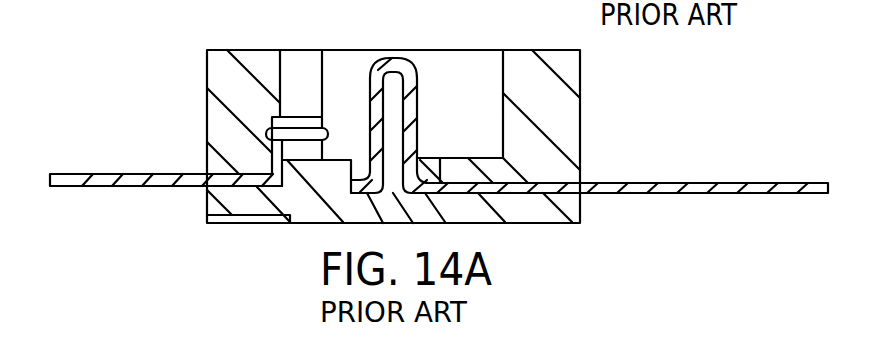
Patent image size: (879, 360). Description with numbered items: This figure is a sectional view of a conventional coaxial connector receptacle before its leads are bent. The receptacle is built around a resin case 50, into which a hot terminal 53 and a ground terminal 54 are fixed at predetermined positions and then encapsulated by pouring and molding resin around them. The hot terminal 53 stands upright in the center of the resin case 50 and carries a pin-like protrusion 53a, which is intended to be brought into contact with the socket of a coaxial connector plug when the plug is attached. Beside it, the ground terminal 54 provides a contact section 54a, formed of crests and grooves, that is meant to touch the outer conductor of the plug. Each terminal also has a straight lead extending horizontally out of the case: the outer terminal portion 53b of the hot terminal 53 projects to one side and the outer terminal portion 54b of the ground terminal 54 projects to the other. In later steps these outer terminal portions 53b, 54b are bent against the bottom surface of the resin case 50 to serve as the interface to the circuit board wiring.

The resin case 50 is at (568, 124).
The hot terminal 53 is at (418, 50).
The pin-like protrusion 53a is at (417, 68).
The outer terminal portion 53b is at (700, 183).
The ground terminal 54 is at (296, 110).
The contact section 54a is at (325, 116).
The outer terminal portion 54b is at (101, 174).